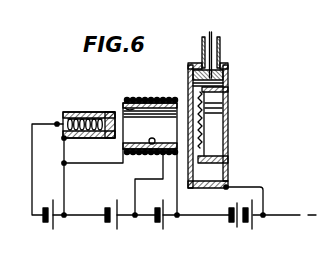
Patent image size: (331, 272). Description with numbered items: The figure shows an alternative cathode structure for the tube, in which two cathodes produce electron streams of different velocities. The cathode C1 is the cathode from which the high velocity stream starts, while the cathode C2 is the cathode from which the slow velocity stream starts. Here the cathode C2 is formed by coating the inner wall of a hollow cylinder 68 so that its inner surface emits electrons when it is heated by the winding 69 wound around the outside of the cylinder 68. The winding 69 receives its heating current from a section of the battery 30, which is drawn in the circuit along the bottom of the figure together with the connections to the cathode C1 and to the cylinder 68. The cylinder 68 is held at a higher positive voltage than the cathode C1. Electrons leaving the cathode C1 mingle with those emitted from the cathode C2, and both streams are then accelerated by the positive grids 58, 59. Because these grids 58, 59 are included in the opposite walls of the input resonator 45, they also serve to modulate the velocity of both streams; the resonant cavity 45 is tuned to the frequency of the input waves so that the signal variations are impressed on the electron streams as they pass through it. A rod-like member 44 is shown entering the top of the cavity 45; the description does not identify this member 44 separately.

The cathode C1 is at (78, 111).
The cathode C2 is at (132, 126).
The winding 69 is at (148, 104).
The hollow cylinder 68 is at (154, 153).
The actuating rod 44 is at (212, 31).
The resonant cavity 45 is at (213, 80).
The positive grid 58 is at (201, 113).
The positive grid 59 is at (206, 131).
The battery 30 is at (241, 229).